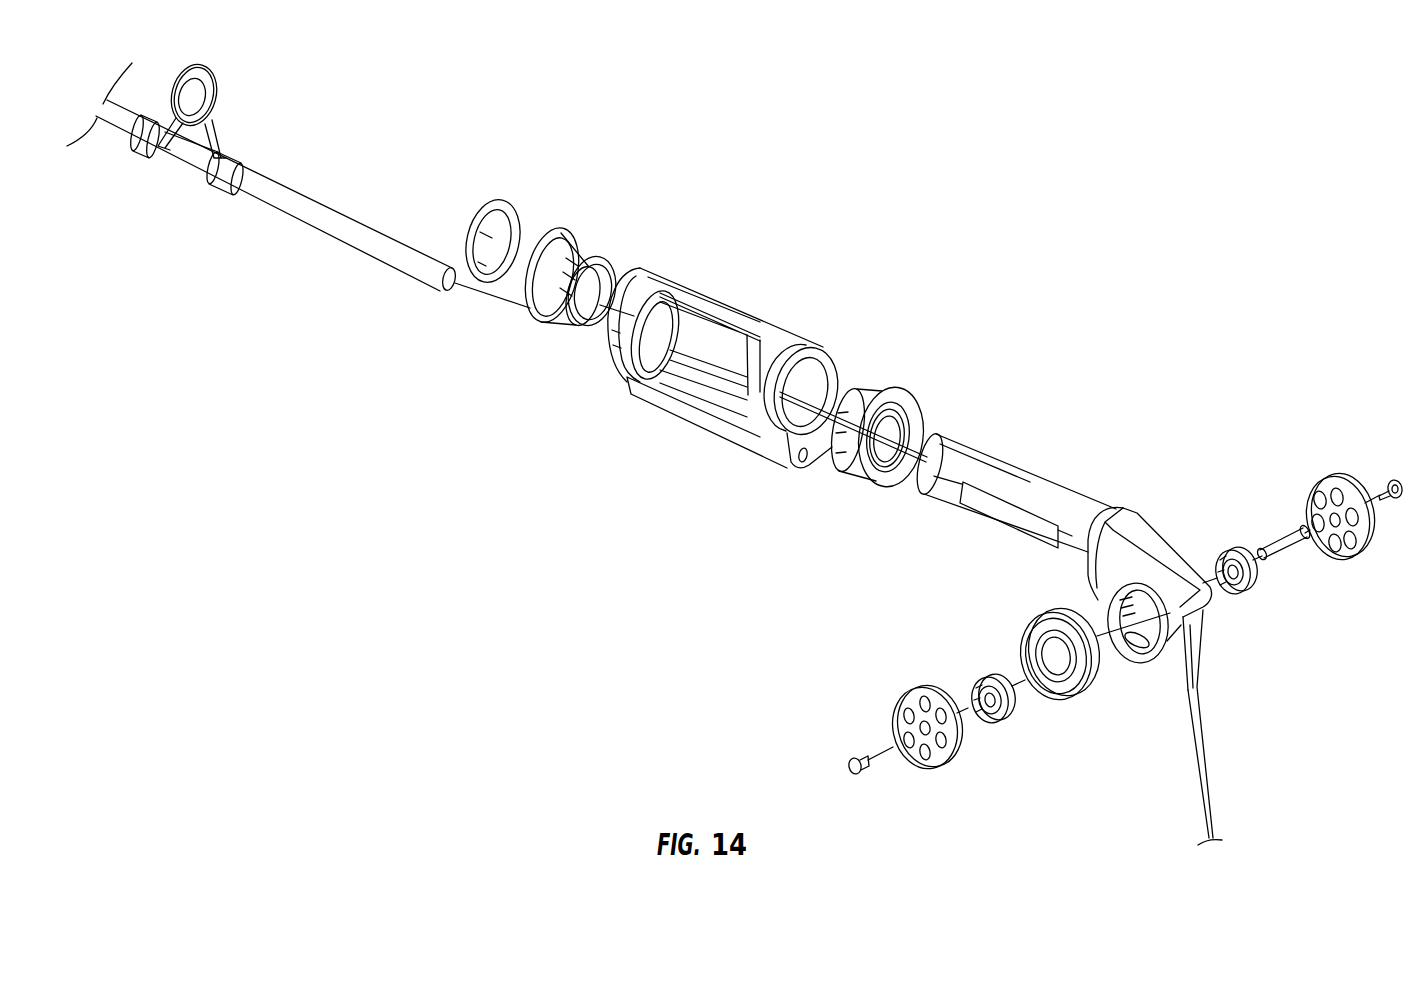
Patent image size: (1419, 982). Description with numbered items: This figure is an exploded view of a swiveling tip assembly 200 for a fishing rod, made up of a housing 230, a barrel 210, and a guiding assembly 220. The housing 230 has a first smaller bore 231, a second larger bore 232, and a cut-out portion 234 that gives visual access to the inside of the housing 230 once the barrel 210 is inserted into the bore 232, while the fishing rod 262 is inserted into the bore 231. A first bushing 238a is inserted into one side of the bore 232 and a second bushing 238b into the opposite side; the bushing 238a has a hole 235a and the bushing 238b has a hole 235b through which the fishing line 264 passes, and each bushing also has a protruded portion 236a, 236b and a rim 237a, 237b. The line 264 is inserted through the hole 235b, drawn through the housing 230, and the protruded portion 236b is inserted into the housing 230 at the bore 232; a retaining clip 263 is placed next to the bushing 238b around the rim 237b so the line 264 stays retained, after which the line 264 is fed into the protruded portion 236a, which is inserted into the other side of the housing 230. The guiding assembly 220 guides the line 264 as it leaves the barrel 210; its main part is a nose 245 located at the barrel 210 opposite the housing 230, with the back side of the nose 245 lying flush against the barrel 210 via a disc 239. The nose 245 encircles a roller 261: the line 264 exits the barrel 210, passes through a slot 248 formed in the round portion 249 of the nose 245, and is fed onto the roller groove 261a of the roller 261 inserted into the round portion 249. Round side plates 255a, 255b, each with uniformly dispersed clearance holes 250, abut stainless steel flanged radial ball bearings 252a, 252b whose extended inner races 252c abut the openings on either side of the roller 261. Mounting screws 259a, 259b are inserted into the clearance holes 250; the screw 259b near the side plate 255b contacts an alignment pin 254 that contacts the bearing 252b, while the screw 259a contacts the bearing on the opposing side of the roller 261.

The swiveling tip assembly 200 is at (787, 248).
The barrel 210 is at (987, 472).
The guiding assembly 220 is at (1196, 492).
The housing 230 is at (815, 406).
The first smaller bore 231 is at (801, 462).
The second larger bore 232 is at (818, 373).
The cut-out portion 234 is at (717, 342).
The hole 235a is at (905, 378).
The hole 235b is at (606, 279).
The protruded portion 236a is at (850, 448).
The protruded portion 236b is at (560, 307).
The rim 237a is at (890, 478).
The rim 237b is at (530, 301).
The first bushing 238a is at (909, 444).
The second bushing 238b is at (525, 268).
The disc 239 is at (1175, 646).
The nose 245 is at (1203, 613).
The slot 248 is at (1199, 680).
The round portion 249 is at (1143, 670).
The clearance holes 250 is at (1128, 626).
The flanged radial ball bearing 252a is at (980, 672).
The flanged radial ball bearing 252b is at (1230, 550).
The extended inner races 252c is at (1002, 716).
The alignment pin 254 is at (1293, 533).
The round side plate 255a is at (930, 770).
The round side plate 255b is at (1350, 560).
The mounting screw 259a is at (867, 757).
The mounting screw 259b is at (1383, 478).
The roller 261 is at (1045, 669).
The roller groove 261a is at (1057, 610).
The fishing rod 262 is at (415, 255).
The retaining clip 263 is at (486, 202).
The fishing line 264 is at (838, 420).